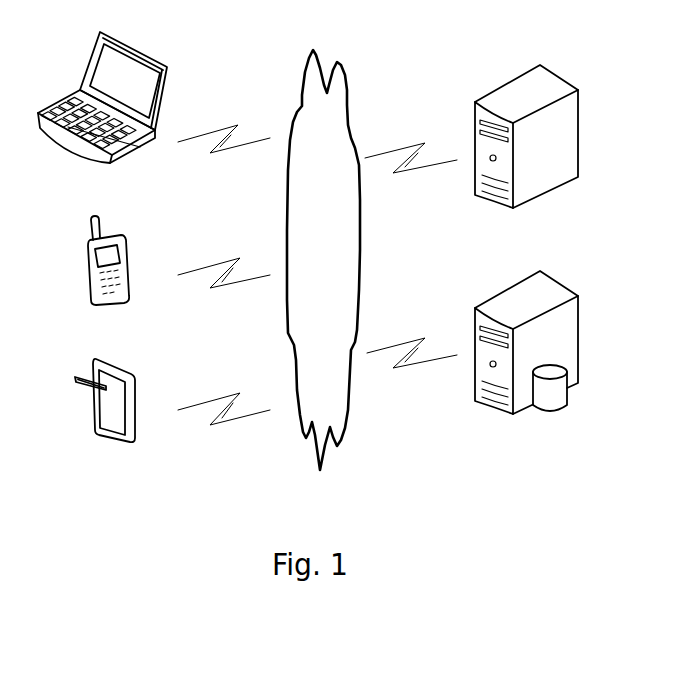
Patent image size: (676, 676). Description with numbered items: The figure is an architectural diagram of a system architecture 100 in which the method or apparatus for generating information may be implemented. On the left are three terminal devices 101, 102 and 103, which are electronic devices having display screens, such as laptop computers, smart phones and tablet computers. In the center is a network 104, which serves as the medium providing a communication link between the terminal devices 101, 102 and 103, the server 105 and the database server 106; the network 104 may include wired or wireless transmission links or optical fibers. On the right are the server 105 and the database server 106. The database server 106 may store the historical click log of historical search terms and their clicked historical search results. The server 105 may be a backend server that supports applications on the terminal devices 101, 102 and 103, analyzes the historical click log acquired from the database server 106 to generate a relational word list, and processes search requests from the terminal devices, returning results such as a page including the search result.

The system architecture 100 is at (505, 30).
The terminal device 101 is at (102, 113).
The terminal device 102 is at (108, 276).
The terminal device 103 is at (105, 418).
The network 104 is at (323, 260).
The server 105 is at (526, 153).
The database server 106 is at (526, 363).